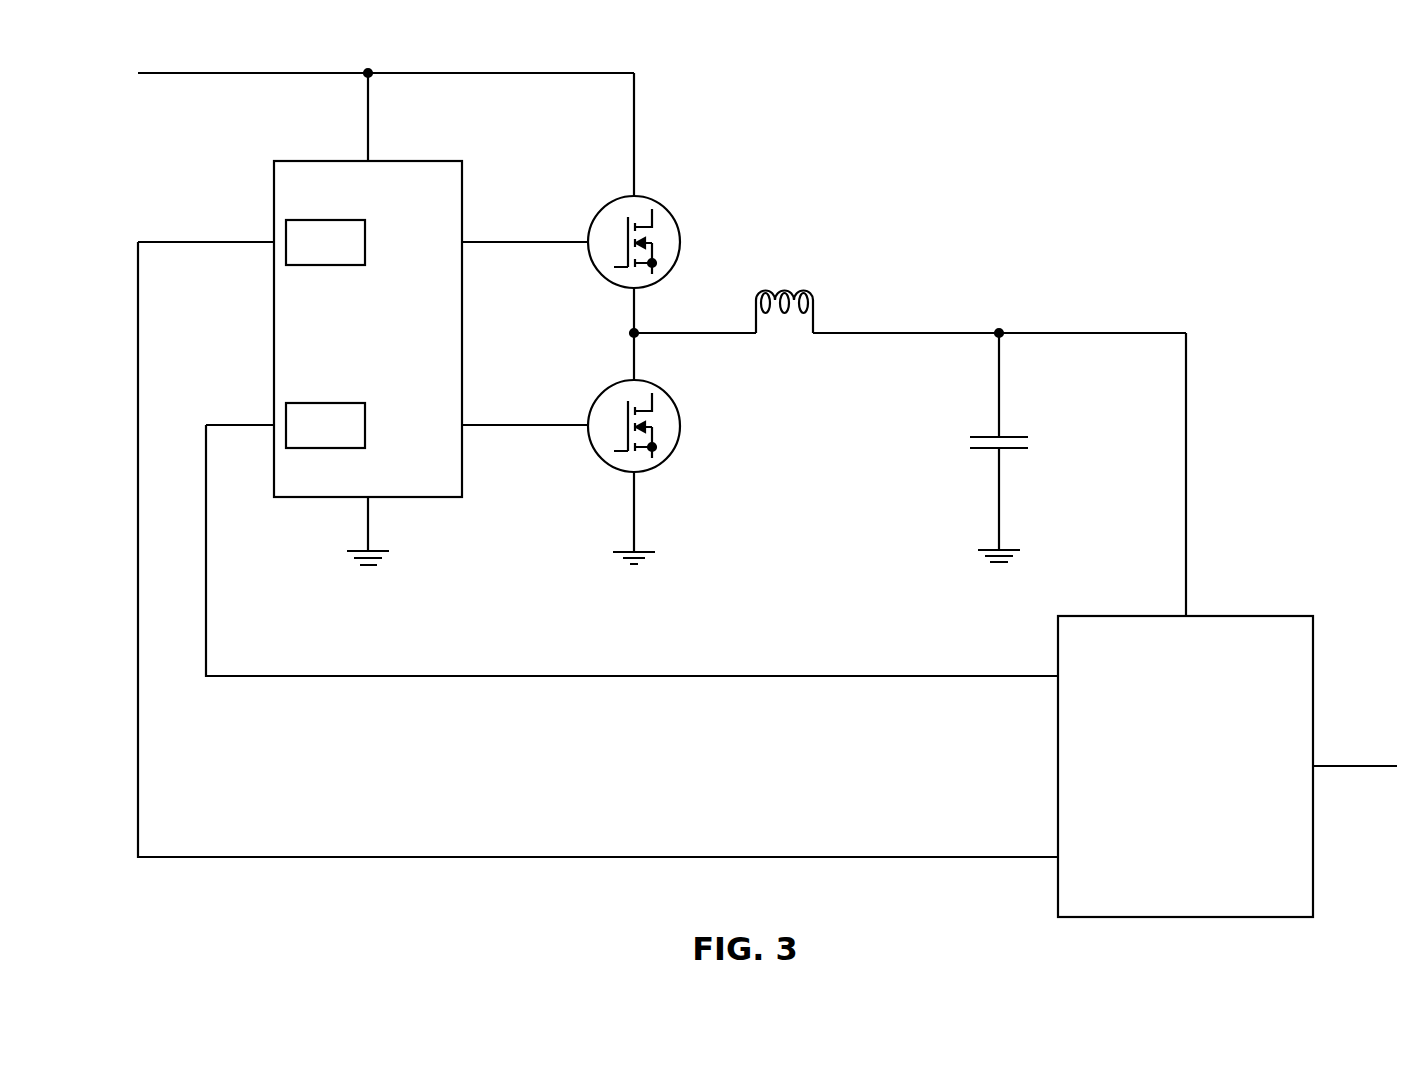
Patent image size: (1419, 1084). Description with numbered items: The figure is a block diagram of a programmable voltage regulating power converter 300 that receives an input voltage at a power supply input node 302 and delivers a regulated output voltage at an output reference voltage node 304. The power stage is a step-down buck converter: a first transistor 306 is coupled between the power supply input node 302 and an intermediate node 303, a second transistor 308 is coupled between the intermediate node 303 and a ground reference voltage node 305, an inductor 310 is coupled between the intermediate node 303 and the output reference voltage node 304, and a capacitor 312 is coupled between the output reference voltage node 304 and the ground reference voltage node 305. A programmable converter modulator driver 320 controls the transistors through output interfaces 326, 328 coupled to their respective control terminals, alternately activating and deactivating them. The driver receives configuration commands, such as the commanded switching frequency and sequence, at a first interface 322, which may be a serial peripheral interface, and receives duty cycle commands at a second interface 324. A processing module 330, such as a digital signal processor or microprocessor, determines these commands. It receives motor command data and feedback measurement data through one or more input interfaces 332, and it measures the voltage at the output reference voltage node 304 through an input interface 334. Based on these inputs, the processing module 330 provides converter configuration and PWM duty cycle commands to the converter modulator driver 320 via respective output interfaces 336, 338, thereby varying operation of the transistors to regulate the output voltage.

The programmable voltage regulating power converter 300 is at (1185, 75).
The power supply input node 302 is at (240, 72).
The intermediate node 303 is at (630, 336).
The output reference voltage node 304 is at (1163, 332).
The ground reference voltage node 305 is at (630, 548).
The first transistor 306 is at (690, 240).
The second transistor 308 is at (690, 423).
The inductor 310 is at (793, 272).
The capacitor 312 is at (1024, 420).
The converter modulator driver 320 is at (348, 160).
The first interface 322 is at (274, 240).
The second interface 324 is at (274, 422).
The output interface 326 is at (463, 240).
The output interface 328 is at (463, 424).
The processing module 330 is at (1132, 614).
The input interface 332 is at (1315, 762).
The input interface 334 is at (1187, 608).
The output interface 336 is at (1058, 854).
The output interface 338 is at (1058, 672).